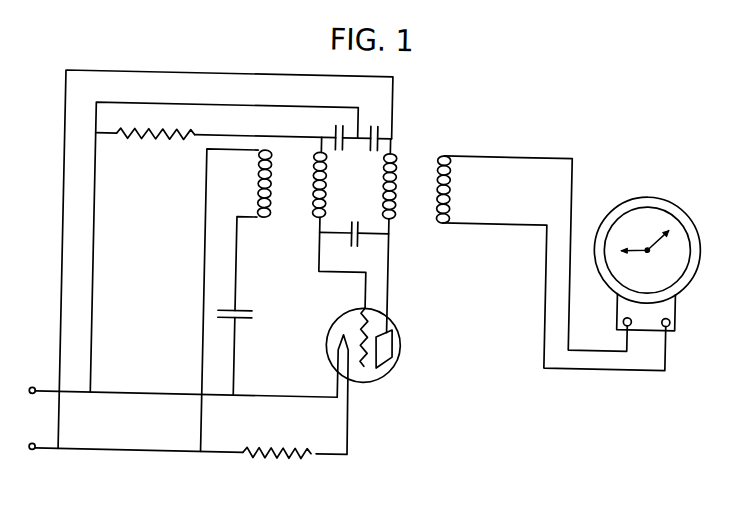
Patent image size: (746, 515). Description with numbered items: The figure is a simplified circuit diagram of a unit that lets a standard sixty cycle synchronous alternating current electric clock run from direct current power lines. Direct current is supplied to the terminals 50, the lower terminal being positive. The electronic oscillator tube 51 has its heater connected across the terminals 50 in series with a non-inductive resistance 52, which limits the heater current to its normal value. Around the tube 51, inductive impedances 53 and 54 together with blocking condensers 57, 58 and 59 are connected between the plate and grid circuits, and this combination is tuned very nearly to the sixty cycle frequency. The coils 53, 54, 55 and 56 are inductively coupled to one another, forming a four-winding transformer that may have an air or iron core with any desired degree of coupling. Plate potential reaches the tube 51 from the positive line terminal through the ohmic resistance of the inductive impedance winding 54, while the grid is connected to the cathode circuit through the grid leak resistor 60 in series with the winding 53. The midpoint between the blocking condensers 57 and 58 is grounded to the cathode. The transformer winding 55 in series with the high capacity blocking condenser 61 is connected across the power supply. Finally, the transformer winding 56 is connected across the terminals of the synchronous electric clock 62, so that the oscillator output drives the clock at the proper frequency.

The terminals 50 is at (36, 396).
The electronic oscillator tube 51 is at (415, 321).
The non-inductive resistance 52 is at (284, 458).
The inductive impedance 53 is at (335, 170).
The inductive impedance winding 54 is at (402, 188).
The transformer winding 55 is at (280, 184).
The transformer winding 56 is at (457, 187).
The blocking condenser 57 is at (336, 125).
The blocking condenser 58 is at (377, 115).
The blocking condenser 59 is at (351, 233).
The grid leak resistor 60 is at (150, 141).
The high capacity blocking condenser 61 is at (250, 301).
The synchronous electric clock 62 is at (654, 180).